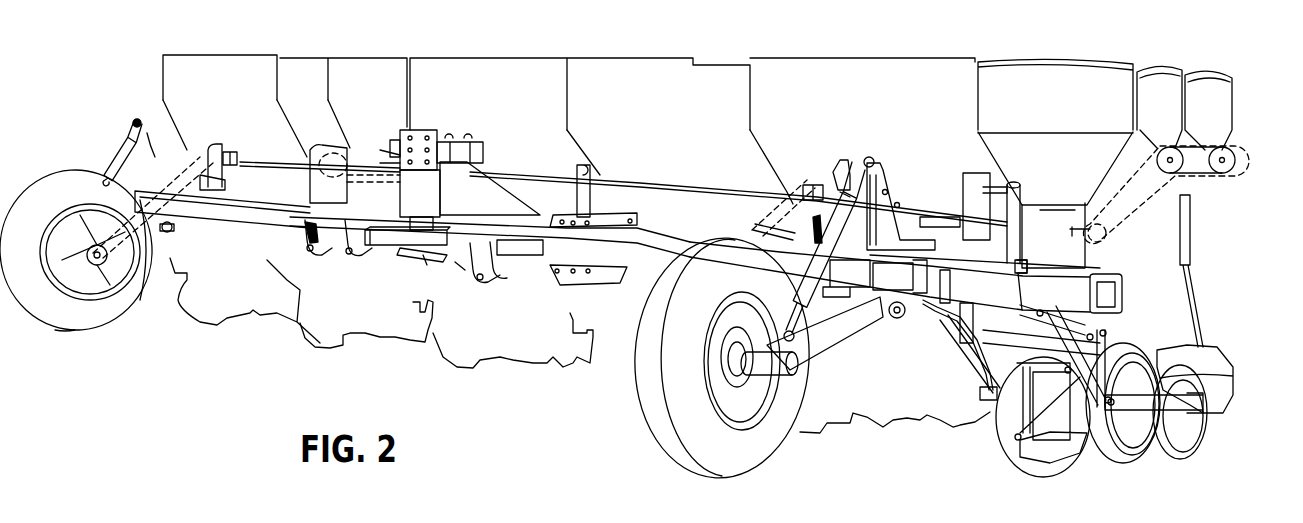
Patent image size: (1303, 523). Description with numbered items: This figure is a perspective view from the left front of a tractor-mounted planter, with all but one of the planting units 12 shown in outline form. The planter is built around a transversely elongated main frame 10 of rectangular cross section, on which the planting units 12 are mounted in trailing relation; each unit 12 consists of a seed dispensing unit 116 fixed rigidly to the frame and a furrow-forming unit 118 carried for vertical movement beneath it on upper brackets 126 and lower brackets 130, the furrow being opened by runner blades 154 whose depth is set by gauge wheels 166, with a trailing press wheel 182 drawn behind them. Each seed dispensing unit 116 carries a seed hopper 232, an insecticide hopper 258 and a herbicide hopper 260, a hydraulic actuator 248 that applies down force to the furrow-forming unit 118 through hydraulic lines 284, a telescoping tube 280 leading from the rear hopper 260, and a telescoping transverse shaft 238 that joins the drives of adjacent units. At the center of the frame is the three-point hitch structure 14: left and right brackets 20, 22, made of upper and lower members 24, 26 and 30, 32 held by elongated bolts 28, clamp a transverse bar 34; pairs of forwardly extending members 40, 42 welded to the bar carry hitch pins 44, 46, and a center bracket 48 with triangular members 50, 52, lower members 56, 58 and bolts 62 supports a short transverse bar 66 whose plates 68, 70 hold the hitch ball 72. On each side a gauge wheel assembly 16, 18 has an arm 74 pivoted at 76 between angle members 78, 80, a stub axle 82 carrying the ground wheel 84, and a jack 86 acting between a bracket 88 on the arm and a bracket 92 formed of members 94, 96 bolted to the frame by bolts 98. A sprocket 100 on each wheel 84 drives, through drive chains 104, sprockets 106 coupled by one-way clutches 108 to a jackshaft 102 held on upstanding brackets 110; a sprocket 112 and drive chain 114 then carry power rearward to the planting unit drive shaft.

The main frame 10 is at (1105, 274).
The planting units 12 is at (289, 44).
The three-point hitch structure 14 is at (395, 301).
The wheel assembly 16 is at (773, 400).
The wheel assembly 18 is at (407, 323).
The left bracket 20 is at (587, 291).
The right bracket 22 is at (282, 244).
The upper member 24 is at (620, 216).
The lower member 26 is at (605, 278).
The elongated bolts 28 is at (592, 250).
The upper member 30 is at (300, 212).
The lower member 32 is at (308, 236).
The transverse bar 34 is at (387, 245).
The forwardly extending members 40 is at (512, 278).
The forwardly extending members 42 is at (318, 258).
The hitch pin 44 is at (478, 283).
The hitch pin 46 is at (360, 260).
The center bracket 48 is at (422, 127).
The triangular member 50 is at (485, 176).
The triangular member 52 is at (430, 181).
The lower member 56 is at (463, 270).
The lower member 58 is at (425, 262).
The bolts 62 is at (421, 217).
The short transverse bar 66 is at (478, 142).
The forwardly extending plate 68 is at (427, 130).
The forwardly extending plate 70 is at (396, 140).
The hitch ball 72 is at (386, 158).
The arm 74 is at (845, 332).
The pivot 76 is at (170, 229).
The angle member 78 is at (925, 310).
The angle member 80 is at (846, 278).
The stub axle 82 is at (797, 373).
The ground-engaging wheel 84 is at (112, 315).
The jack 86 is at (112, 157).
The bracket 88 is at (798, 367).
The bracket 92 is at (157, 115).
The left member 94 is at (898, 200).
The right member 96 is at (880, 180).
The bolts 98 is at (900, 276).
The sprocket 100 is at (80, 230).
The jackshaft 102 is at (640, 186).
The drive chains 104 is at (130, 270).
The sprockets 106 is at (218, 148).
The one-way clutch 108 is at (238, 158).
The upstanding brackets 110 is at (238, 178).
The sprocket 112 is at (320, 144).
The drive chain 114 is at (340, 147).
The seed dispensing unit 116 is at (1245, 131).
The furrow-forming unit 118 is at (1242, 367).
The upper brackets 126 is at (1012, 283).
The lower brackets 130 is at (947, 307).
The runner blades 154 is at (1045, 468).
The gauge wheels 166 is at (1110, 462).
The press wheel 182 is at (1180, 455).
The hopper 232 is at (1065, 62).
The telescoping transverse shaft 238 is at (937, 217).
The hydraulic actuator 248 is at (1031, 193).
The pesticide hopper 258 is at (1160, 72).
The pesticide hopper 260 is at (1225, 76).
The telescoping tube 280 is at (1192, 248).
The hydraulic lines 284 is at (978, 178).